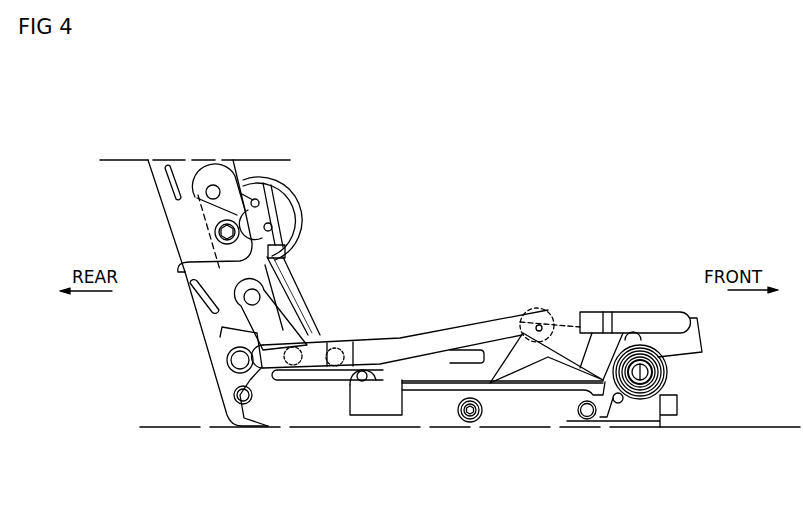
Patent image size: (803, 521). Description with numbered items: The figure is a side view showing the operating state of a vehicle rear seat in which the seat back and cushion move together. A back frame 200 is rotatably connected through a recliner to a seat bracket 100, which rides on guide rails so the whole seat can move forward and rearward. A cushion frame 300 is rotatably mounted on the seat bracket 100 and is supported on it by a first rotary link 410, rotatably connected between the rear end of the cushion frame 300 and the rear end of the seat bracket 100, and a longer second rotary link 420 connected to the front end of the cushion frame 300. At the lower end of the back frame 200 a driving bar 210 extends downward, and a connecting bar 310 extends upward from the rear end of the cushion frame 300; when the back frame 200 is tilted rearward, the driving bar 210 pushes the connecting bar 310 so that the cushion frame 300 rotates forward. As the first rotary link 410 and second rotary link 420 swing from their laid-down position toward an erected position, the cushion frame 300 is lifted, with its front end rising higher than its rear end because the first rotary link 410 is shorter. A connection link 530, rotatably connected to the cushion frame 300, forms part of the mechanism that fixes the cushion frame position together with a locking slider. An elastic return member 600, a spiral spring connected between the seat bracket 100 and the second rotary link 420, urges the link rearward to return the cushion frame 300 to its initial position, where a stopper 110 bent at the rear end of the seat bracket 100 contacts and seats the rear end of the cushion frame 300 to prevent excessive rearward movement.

The seat bracket 100 is at (498, 410).
The stopper 110 is at (230, 338).
The back frame 200 is at (173, 170).
The driving bar 210 is at (283, 250).
The cushion frame 300 is at (465, 322).
The connecting bar 310 is at (270, 316).
The first rotary link 410 is at (365, 400).
The second rotary link 420 is at (588, 358).
The connection link 530 is at (533, 318).
The elastic return member 600 is at (667, 371).